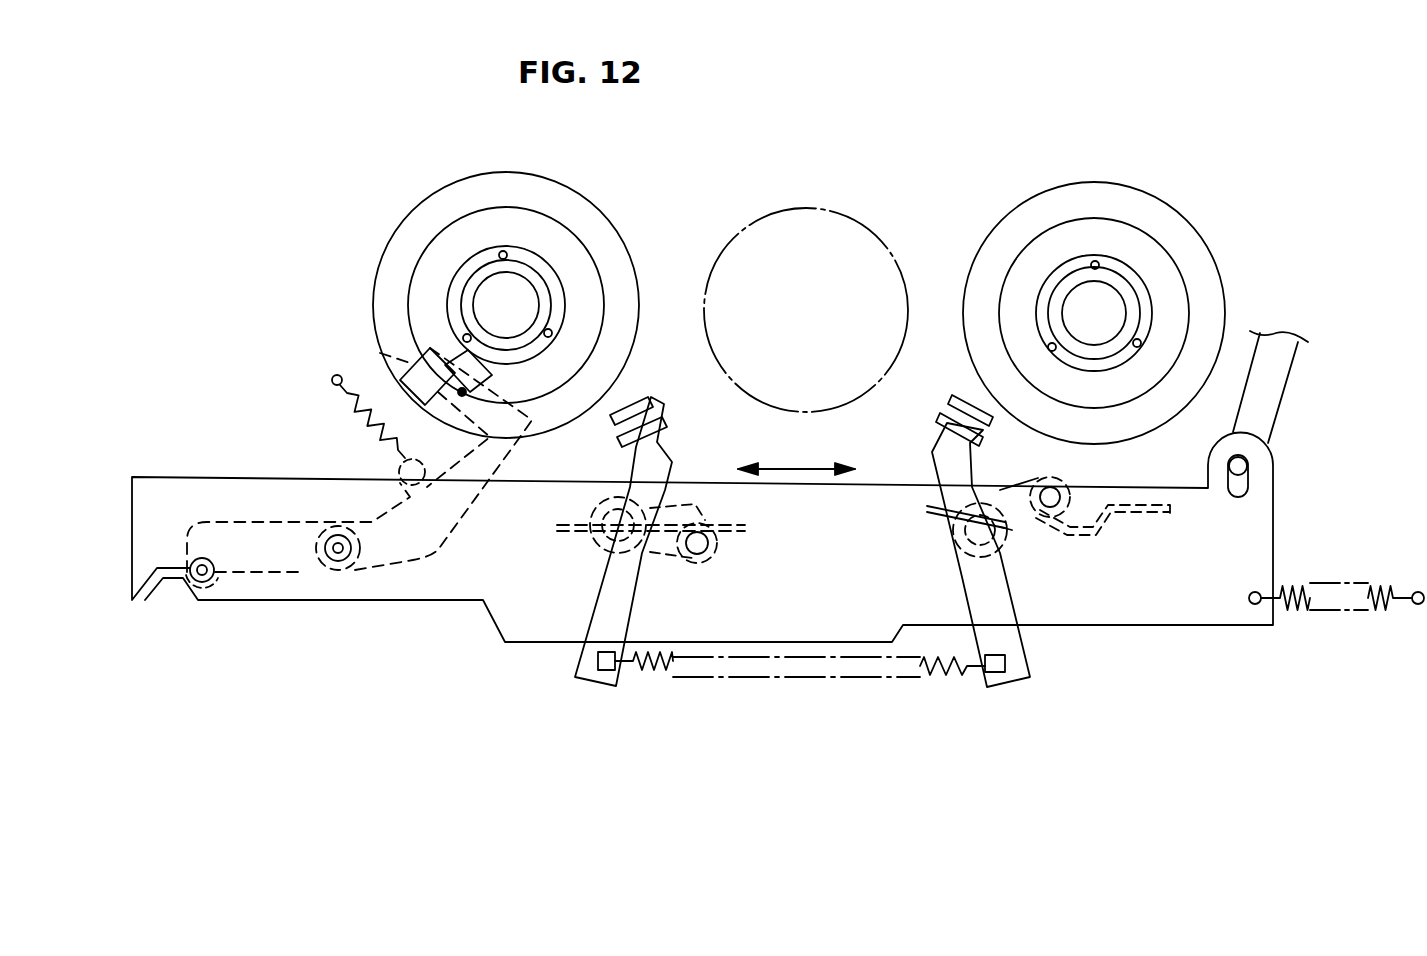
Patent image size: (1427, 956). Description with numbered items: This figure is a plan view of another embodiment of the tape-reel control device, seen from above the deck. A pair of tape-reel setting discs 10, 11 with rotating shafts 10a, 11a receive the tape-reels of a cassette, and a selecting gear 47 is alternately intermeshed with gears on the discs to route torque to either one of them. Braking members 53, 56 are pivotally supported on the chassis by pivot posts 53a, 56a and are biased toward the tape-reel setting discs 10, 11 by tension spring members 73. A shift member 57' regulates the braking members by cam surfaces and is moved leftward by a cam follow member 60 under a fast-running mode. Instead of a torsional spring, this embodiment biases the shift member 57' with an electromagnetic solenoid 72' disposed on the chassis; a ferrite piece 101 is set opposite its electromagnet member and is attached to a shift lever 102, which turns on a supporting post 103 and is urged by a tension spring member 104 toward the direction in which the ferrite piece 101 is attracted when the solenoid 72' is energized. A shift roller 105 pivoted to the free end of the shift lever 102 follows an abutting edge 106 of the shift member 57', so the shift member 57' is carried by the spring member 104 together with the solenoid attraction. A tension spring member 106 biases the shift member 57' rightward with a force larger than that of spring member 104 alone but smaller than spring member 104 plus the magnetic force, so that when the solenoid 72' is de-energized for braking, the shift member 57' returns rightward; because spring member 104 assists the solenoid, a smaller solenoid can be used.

The tape-reel setting disc 10 is at (562, 248).
The rotating shaft 10a is at (523, 250).
The tape-reel setting disc 11 is at (1153, 257).
The rotating shaft 11a is at (1093, 267).
The selecting gear 47 is at (808, 207).
The braking member 53 is at (637, 405).
The pivot post 53a is at (605, 496).
The braking member 56 is at (970, 397).
The pivot post 56a is at (933, 540).
The shift member 57' is at (702, 532).
The cam follow member 60 is at (1270, 392).
The electromagnetic solenoid 72' is at (394, 355).
The tension spring member 73 is at (762, 680).
The ferrite piece 101 is at (447, 353).
The shift lever 102 is at (400, 562).
The supporting post 103 is at (330, 570).
The tension spring member 104 is at (360, 432).
The shift roller 105 is at (210, 575).
The abutting edge / tension spring member 106 is at (1333, 612).